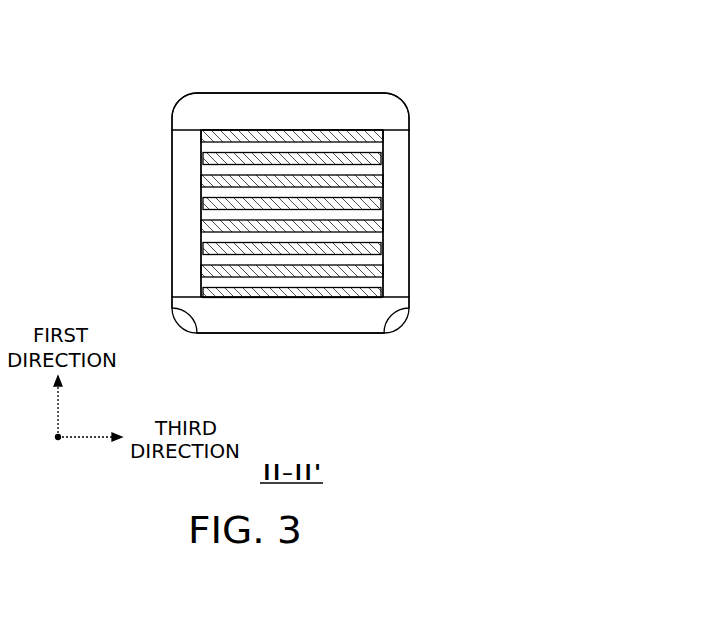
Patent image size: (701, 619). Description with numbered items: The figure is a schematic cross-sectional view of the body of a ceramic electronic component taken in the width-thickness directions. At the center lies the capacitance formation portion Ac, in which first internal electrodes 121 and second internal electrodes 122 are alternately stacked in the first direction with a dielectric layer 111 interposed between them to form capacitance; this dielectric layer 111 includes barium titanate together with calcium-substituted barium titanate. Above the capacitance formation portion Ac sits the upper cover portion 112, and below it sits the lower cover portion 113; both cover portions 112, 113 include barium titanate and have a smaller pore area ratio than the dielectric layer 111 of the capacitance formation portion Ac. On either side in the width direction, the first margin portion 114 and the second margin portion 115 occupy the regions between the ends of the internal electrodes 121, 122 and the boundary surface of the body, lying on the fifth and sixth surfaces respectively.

The dielectric layer 111 is at (370, 148).
The upper cover portion 112 is at (286, 102).
The lower cover portion 113 is at (290, 325).
The first margin portion 114 is at (182, 243).
The second margin portion 115 is at (405, 243).
The first internal electrode 121 is at (372, 134).
The second internal electrode 122 is at (372, 160).
The capacitance formation portion Ac is at (200, 217).